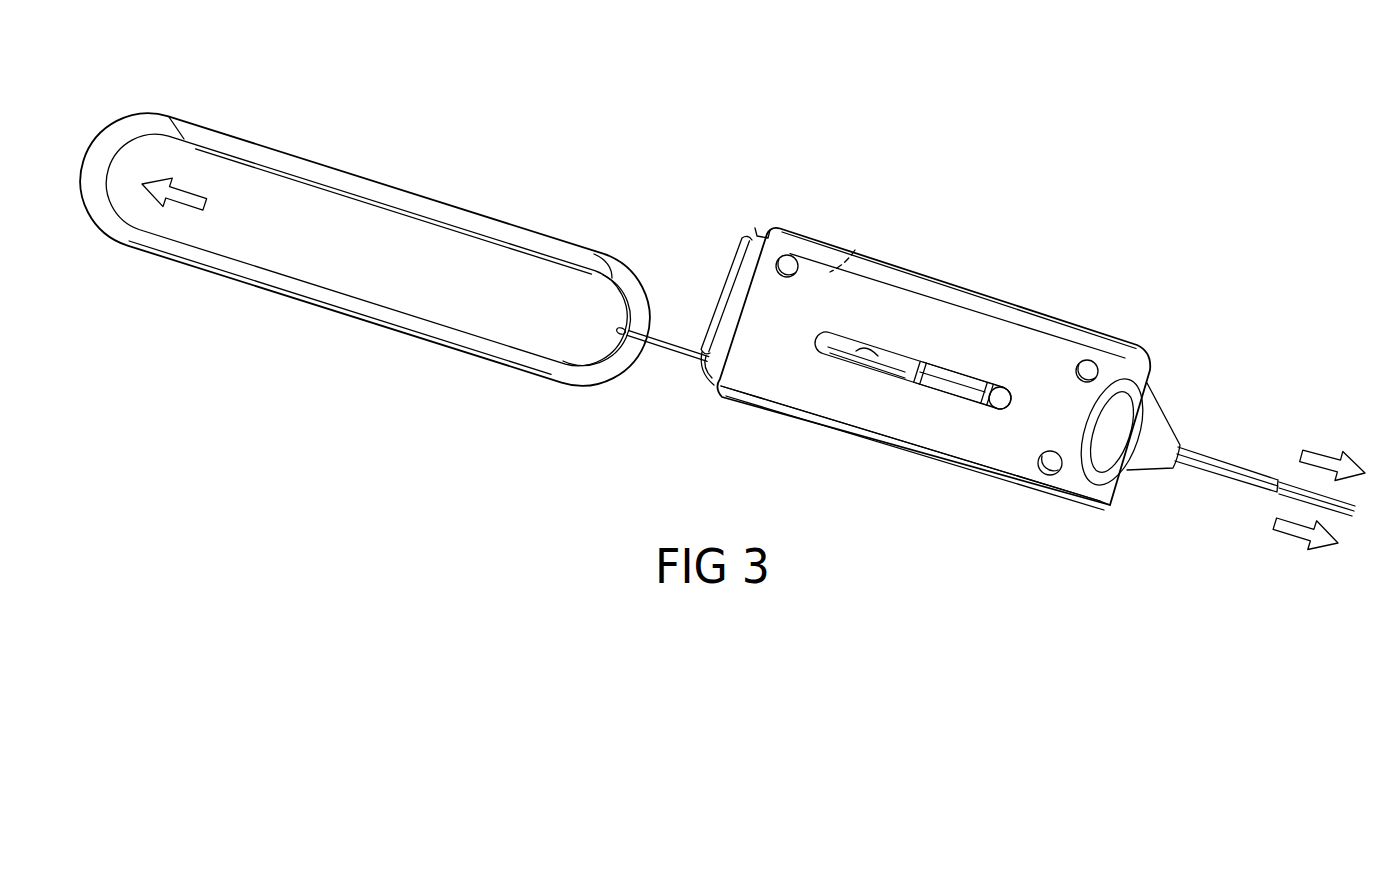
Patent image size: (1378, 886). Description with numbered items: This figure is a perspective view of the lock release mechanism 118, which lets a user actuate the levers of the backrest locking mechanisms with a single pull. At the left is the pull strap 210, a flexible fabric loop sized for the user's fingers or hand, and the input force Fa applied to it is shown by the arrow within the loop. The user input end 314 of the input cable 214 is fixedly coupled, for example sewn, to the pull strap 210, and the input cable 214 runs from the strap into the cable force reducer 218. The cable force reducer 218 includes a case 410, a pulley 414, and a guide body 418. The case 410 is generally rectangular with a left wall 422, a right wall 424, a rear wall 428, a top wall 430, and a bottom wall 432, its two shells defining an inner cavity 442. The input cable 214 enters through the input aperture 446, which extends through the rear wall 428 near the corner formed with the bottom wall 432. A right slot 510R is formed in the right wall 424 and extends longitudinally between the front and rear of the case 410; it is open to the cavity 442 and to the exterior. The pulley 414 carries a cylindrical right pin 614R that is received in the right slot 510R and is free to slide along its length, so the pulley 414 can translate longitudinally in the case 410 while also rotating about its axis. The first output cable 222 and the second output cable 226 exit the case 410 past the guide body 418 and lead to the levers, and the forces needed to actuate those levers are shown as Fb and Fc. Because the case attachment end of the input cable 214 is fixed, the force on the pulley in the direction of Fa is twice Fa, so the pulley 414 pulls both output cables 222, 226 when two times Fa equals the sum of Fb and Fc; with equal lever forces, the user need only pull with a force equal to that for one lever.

The lock release mechanism 118 is at (600, 160).
The pull strap 210 is at (319, 308).
The input cable 214 is at (667, 347).
The cable force reducer 218 is at (836, 440).
The first output cable 222 is at (1283, 487).
The second output cable 226 is at (1297, 496).
The user input end 314 is at (616, 329).
The case 410 is at (975, 280).
The pulley 414 is at (953, 387).
The guide body 418 is at (1158, 425).
The left wall 422 is at (860, 342).
The right wall 424 is at (800, 378).
The rear wall 428 is at (728, 280).
The top wall 430 is at (1035, 312).
The bottom wall 432 is at (1010, 470).
The inner cavity 442 is at (817, 277).
The input aperture 446 is at (703, 365).
The right slot 510R is at (883, 377).
The right pin 614R is at (1005, 407).
The input force Fa is at (152, 183).
The lever actuation force Fb is at (1330, 450).
The lever actuation force Fc is at (1293, 537).